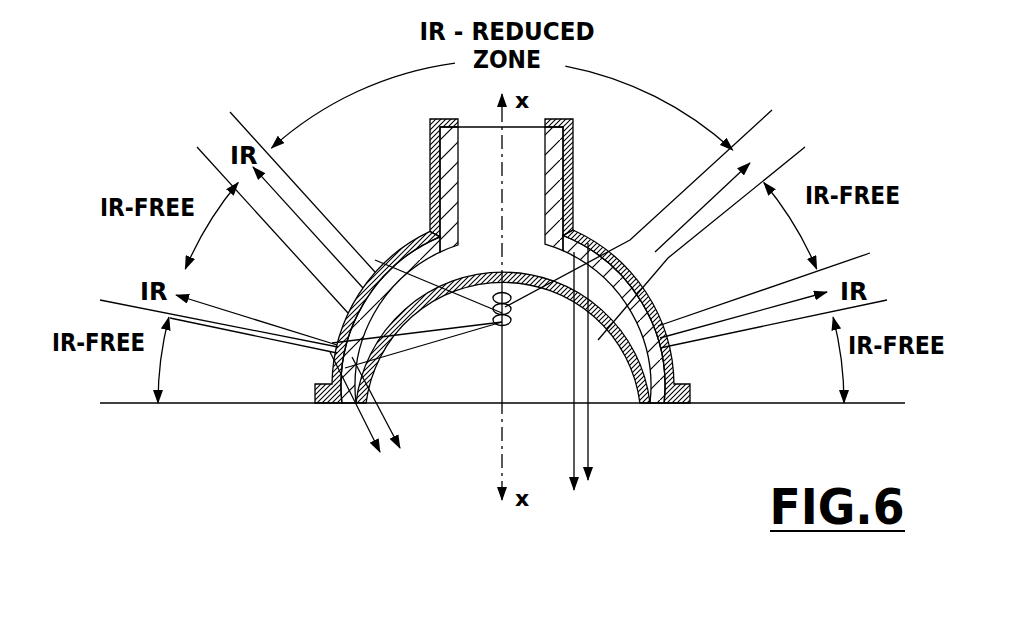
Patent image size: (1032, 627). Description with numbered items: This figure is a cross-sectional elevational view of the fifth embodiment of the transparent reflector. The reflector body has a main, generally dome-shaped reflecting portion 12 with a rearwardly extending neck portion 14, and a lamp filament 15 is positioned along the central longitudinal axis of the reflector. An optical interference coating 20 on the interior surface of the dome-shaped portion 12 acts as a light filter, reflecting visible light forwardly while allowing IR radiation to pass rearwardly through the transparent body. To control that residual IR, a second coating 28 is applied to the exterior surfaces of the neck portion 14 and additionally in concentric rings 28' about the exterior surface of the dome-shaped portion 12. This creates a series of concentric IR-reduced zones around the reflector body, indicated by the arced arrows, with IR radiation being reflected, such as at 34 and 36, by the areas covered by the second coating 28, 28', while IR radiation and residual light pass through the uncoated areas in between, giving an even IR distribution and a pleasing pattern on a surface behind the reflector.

The dome-shaped reflecting portion 12 is at (665, 406).
The neck portion 14 is at (552, 119).
The filament 15 is at (492, 312).
The optical interference coating 20 is at (618, 316).
The second coating 28 is at (503, 272).
The concentric rings 28' is at (525, 316).
The reflected IR radiation 34 is at (362, 422).
The reflected IR radiation 36 is at (589, 424).